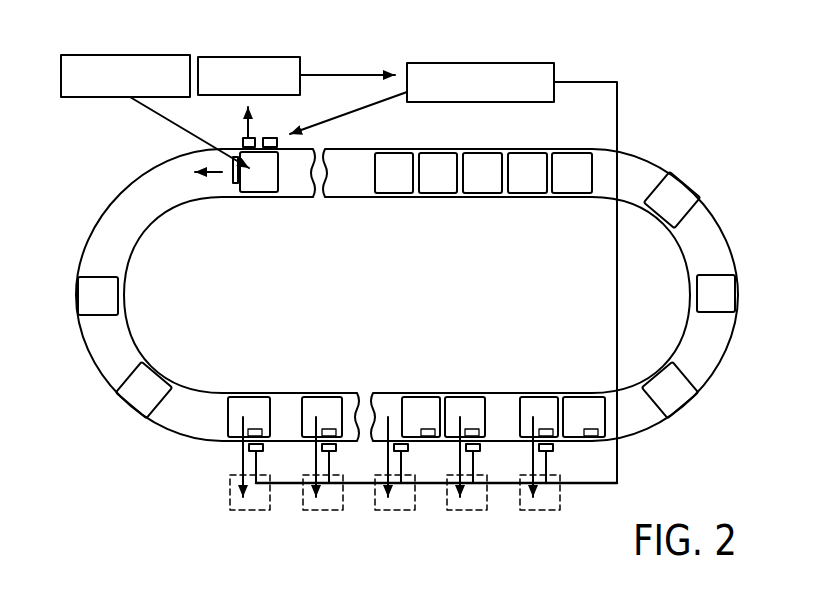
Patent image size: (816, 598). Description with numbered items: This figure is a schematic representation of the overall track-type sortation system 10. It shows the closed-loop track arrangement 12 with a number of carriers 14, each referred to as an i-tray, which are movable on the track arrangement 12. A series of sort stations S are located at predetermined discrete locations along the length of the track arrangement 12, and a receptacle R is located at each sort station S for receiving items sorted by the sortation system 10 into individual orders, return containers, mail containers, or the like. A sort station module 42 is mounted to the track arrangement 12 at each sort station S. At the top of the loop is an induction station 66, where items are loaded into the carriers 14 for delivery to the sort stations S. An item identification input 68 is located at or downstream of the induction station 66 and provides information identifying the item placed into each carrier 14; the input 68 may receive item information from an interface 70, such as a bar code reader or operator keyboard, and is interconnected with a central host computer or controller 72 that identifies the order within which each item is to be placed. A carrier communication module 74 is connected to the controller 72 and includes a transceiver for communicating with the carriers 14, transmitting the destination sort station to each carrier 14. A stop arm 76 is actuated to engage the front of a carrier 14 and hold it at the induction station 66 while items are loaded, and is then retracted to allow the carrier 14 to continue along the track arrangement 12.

The sortation system 10 is at (65, 137).
The track arrangement 12 is at (88, 200).
The carrier 14 is at (485, 151).
The sort station module 42 is at (278, 448).
The induction station 66 is at (61, 72).
The item identification input 68 is at (255, 57).
The interface 70 is at (243, 141).
The controller 72 is at (487, 63).
The carrier communication module 74 is at (270, 137).
The stop arm 76 is at (232, 181).
The sort station S is at (232, 446).
The receptacle R is at (230, 492).